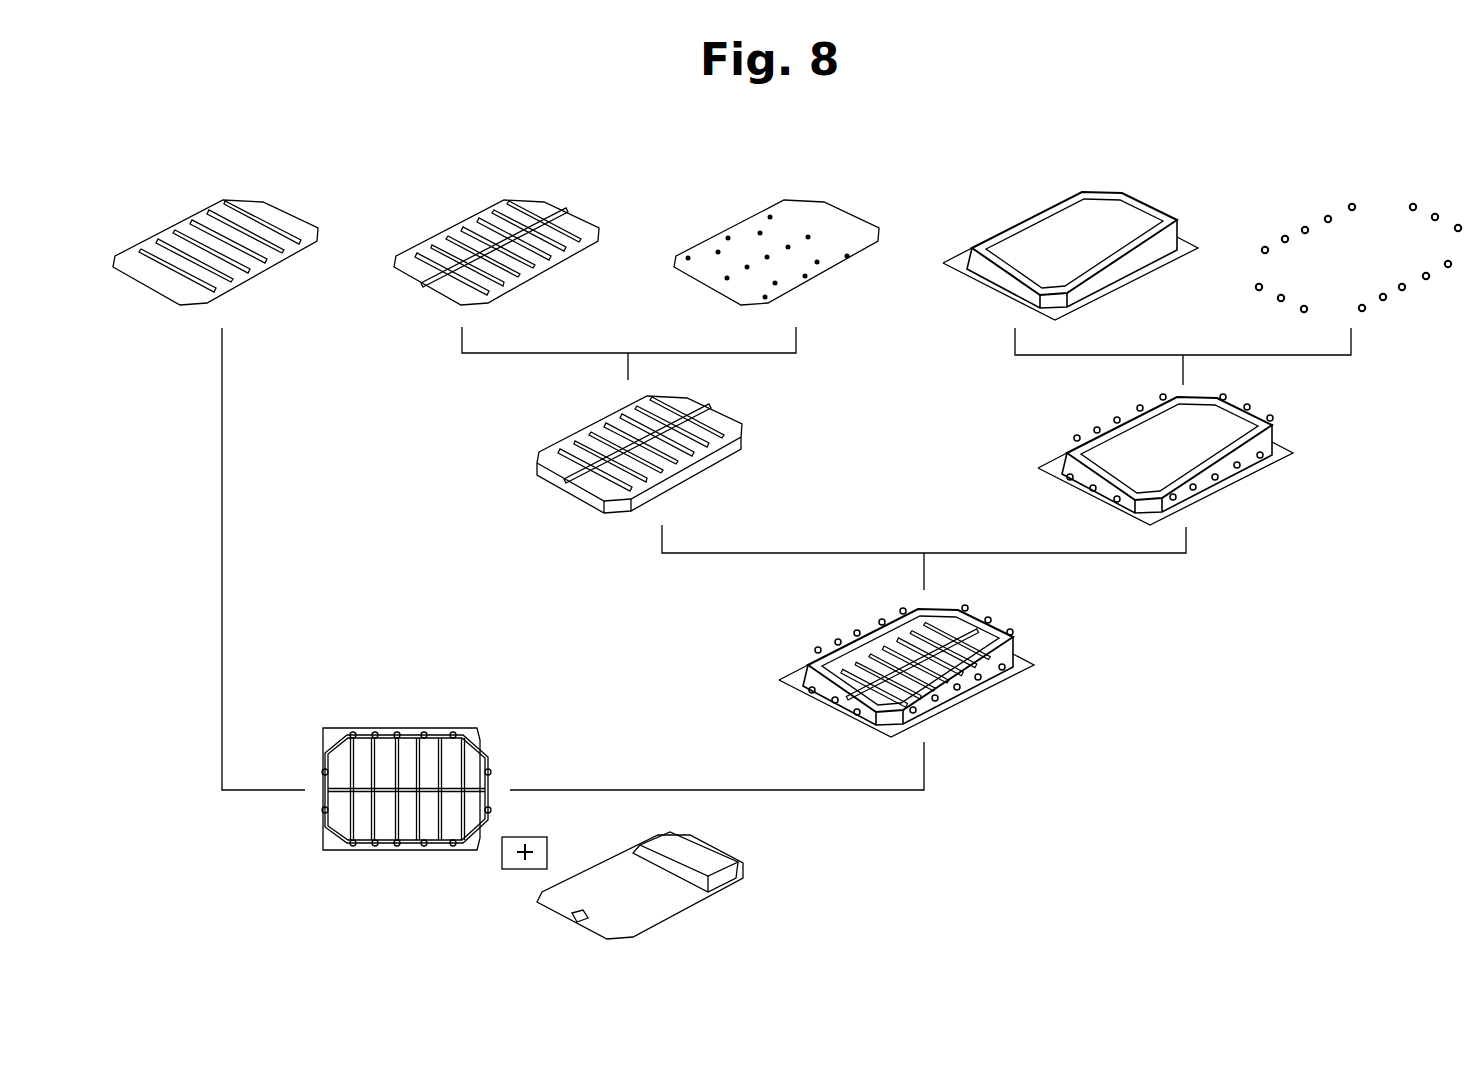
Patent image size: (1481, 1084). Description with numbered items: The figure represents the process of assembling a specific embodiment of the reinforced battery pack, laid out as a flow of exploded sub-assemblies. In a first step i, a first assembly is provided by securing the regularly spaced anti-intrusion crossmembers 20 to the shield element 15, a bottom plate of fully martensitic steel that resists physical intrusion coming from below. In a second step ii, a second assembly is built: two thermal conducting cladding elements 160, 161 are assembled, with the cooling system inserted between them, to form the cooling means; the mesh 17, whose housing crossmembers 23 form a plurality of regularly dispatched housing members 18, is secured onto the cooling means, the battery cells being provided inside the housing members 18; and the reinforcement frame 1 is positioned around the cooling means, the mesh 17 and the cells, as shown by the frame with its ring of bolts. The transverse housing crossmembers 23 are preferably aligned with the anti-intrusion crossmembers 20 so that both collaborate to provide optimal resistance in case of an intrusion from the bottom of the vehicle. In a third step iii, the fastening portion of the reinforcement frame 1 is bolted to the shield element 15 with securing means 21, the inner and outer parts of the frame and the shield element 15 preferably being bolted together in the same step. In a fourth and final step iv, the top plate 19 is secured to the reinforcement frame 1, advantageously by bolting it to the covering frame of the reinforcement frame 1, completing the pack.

The first step i is at (215, 246).
The shield element 15 is at (165, 290).
The anti-intrusion crossmembers 20 is at (263, 228).
The mesh 17 is at (504, 269).
The cladding element 160 is at (537, 207).
The housing members 18 is at (587, 252).
The housing crossmembers 23 is at (458, 233).
The cladding element 161 is at (838, 225).
The reinforcement frame 1 is at (1168, 178).
The securing means 21 is at (1448, 268).
The second step ii is at (1062, 637).
The third step iii is at (356, 876).
The fourth step iv is at (604, 896).
The top plate 19 is at (643, 908).